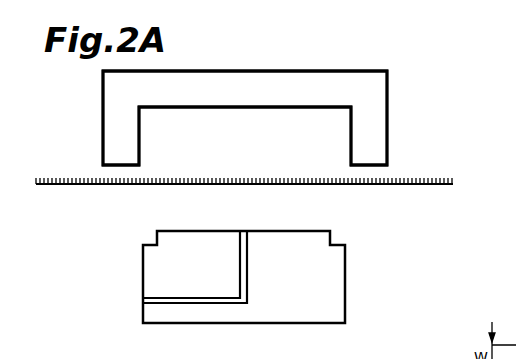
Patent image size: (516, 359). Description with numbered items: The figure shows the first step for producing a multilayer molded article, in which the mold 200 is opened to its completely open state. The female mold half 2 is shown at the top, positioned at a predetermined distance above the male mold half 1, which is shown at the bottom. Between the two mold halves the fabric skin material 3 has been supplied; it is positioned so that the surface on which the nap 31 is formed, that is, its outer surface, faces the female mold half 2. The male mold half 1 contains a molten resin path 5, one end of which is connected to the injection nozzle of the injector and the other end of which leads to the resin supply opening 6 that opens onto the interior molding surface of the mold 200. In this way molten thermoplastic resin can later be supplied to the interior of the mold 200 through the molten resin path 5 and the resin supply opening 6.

The mold 200 is at (393, 64).
The female mold half 2 is at (373, 113).
The nap 31 is at (435, 178).
The fabric skin material 3 is at (418, 184).
The male mold half 1 is at (335, 290).
The resin supply opening 6 is at (245, 231).
The molten resin path 5 is at (190, 303).